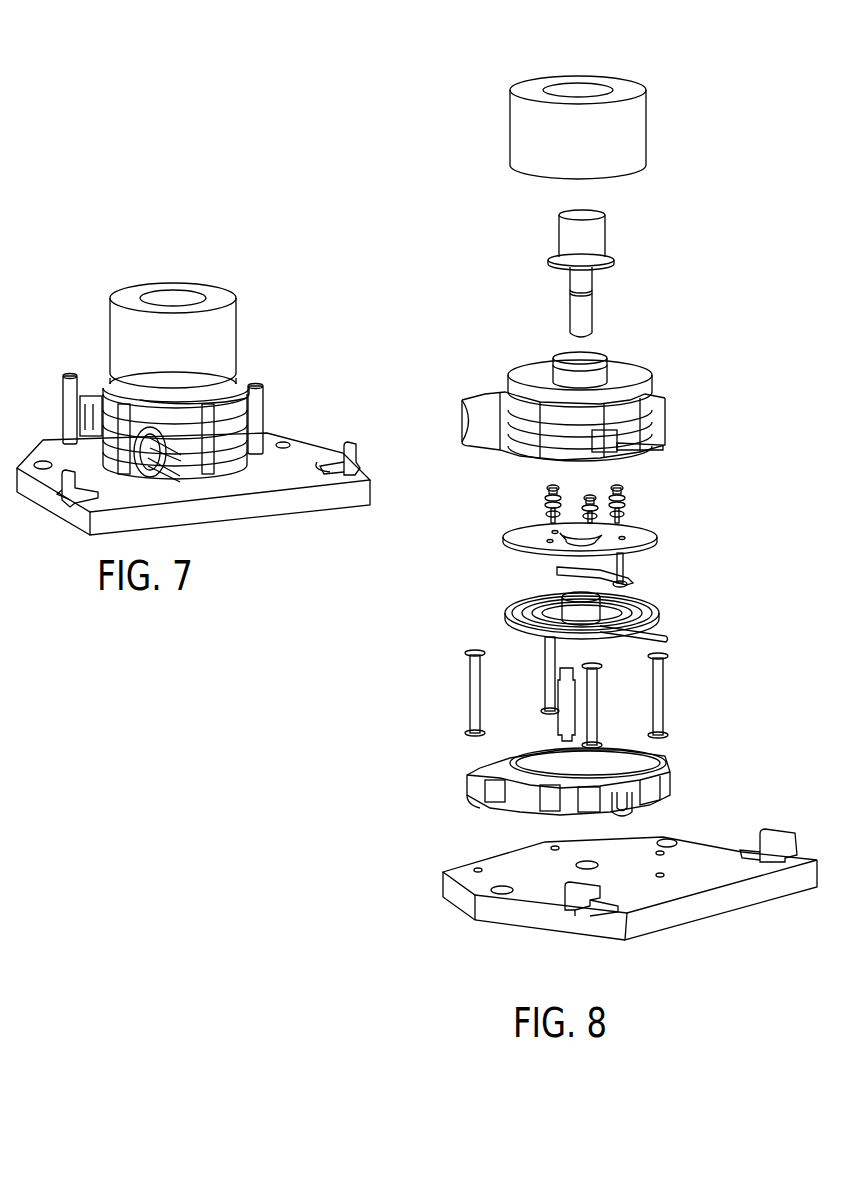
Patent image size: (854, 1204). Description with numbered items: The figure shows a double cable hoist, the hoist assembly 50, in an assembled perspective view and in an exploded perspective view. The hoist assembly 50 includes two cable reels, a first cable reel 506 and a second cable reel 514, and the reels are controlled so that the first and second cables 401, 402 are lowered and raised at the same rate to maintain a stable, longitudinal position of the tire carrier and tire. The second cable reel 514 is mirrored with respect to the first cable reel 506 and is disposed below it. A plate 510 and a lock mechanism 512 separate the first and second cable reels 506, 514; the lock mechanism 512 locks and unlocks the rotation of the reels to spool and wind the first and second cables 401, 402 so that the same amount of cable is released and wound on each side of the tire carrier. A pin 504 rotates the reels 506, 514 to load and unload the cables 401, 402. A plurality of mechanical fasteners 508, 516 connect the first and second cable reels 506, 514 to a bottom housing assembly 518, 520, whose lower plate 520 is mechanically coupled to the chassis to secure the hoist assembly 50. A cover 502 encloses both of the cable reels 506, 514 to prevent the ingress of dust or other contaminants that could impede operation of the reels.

In FIG. 7, the hoist assembly 50 is at (108, 258).
In FIG. 8, the hoist assembly 50 is at (680, 72).
In FIG. 8, the cover 502 is at (632, 145).
In FIG. 8, the pin 504 is at (592, 238).
In FIG. 8, the first cable reel 506 is at (630, 425).
In FIG. 8, the first cable 401 is at (637, 452).
In FIG. 8, the mechanical fasteners 508 is at (545, 510).
In FIG. 8, the plate 510 is at (640, 540).
In FIG. 8, the lock mechanism 512 is at (630, 580).
In FIG. 8, the second cable reel 514 is at (552, 607).
In FIG. 8, the second cable 402 is at (657, 640).
In FIG. 8, the mechanical fasteners 516 is at (657, 690).
In FIG. 8, the bottom housing assembly 518 is at (478, 788).
In FIG. 8, the lower plate 520 is at (677, 878).